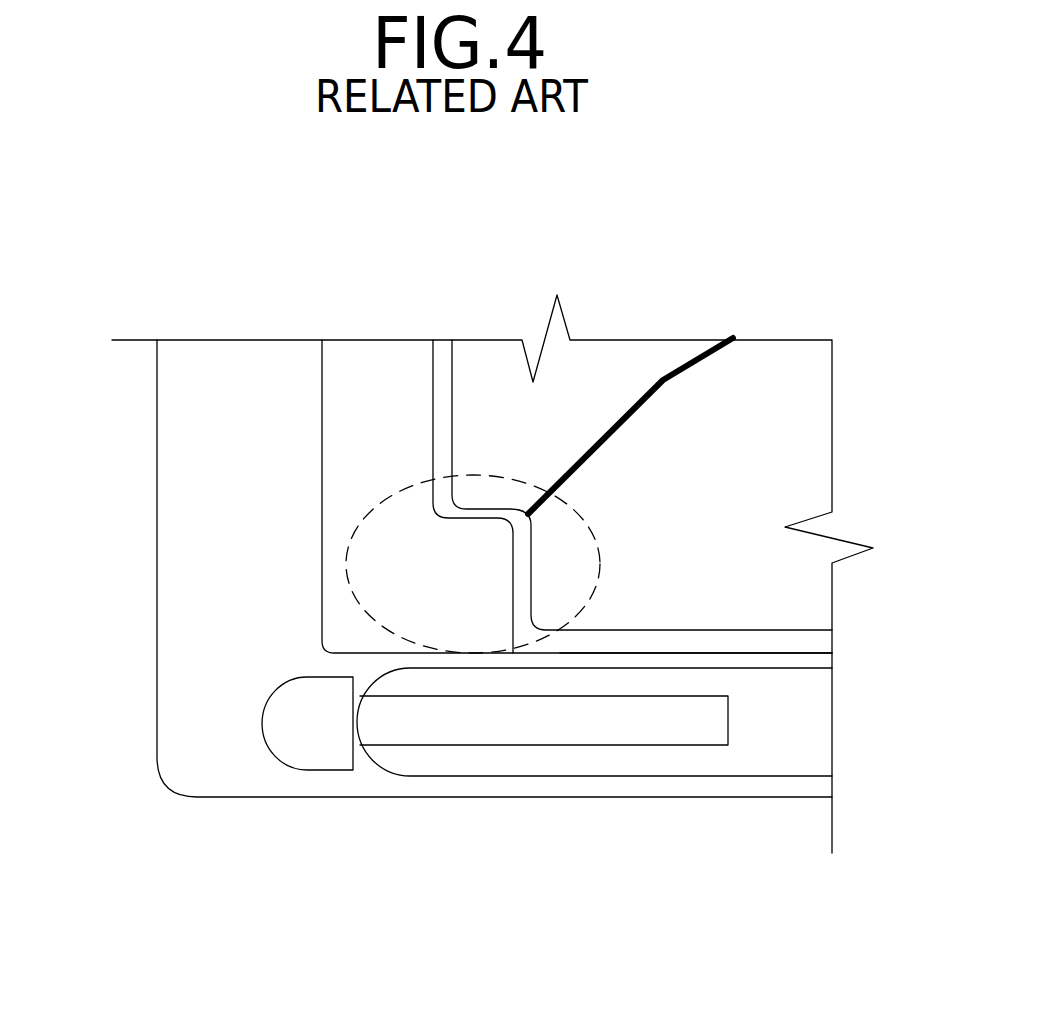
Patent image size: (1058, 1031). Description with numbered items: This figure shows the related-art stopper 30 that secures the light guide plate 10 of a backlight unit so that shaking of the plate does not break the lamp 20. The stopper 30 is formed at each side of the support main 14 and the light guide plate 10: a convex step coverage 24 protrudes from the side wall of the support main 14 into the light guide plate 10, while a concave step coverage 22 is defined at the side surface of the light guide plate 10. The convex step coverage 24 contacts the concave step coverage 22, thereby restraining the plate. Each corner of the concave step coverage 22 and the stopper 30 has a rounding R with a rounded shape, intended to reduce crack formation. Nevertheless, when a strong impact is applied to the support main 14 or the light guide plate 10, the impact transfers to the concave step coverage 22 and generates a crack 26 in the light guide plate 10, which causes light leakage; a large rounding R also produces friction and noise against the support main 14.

The light guide plate 10 is at (820, 460).
The support main 14 is at (338, 485).
The lamp 20 is at (768, 757).
The concave step coverage 22 is at (533, 590).
The convex step coverage 24 is at (478, 545).
The crack 26 is at (655, 388).
The stopper 30 is at (363, 613).
The rounding R is at (533, 514).